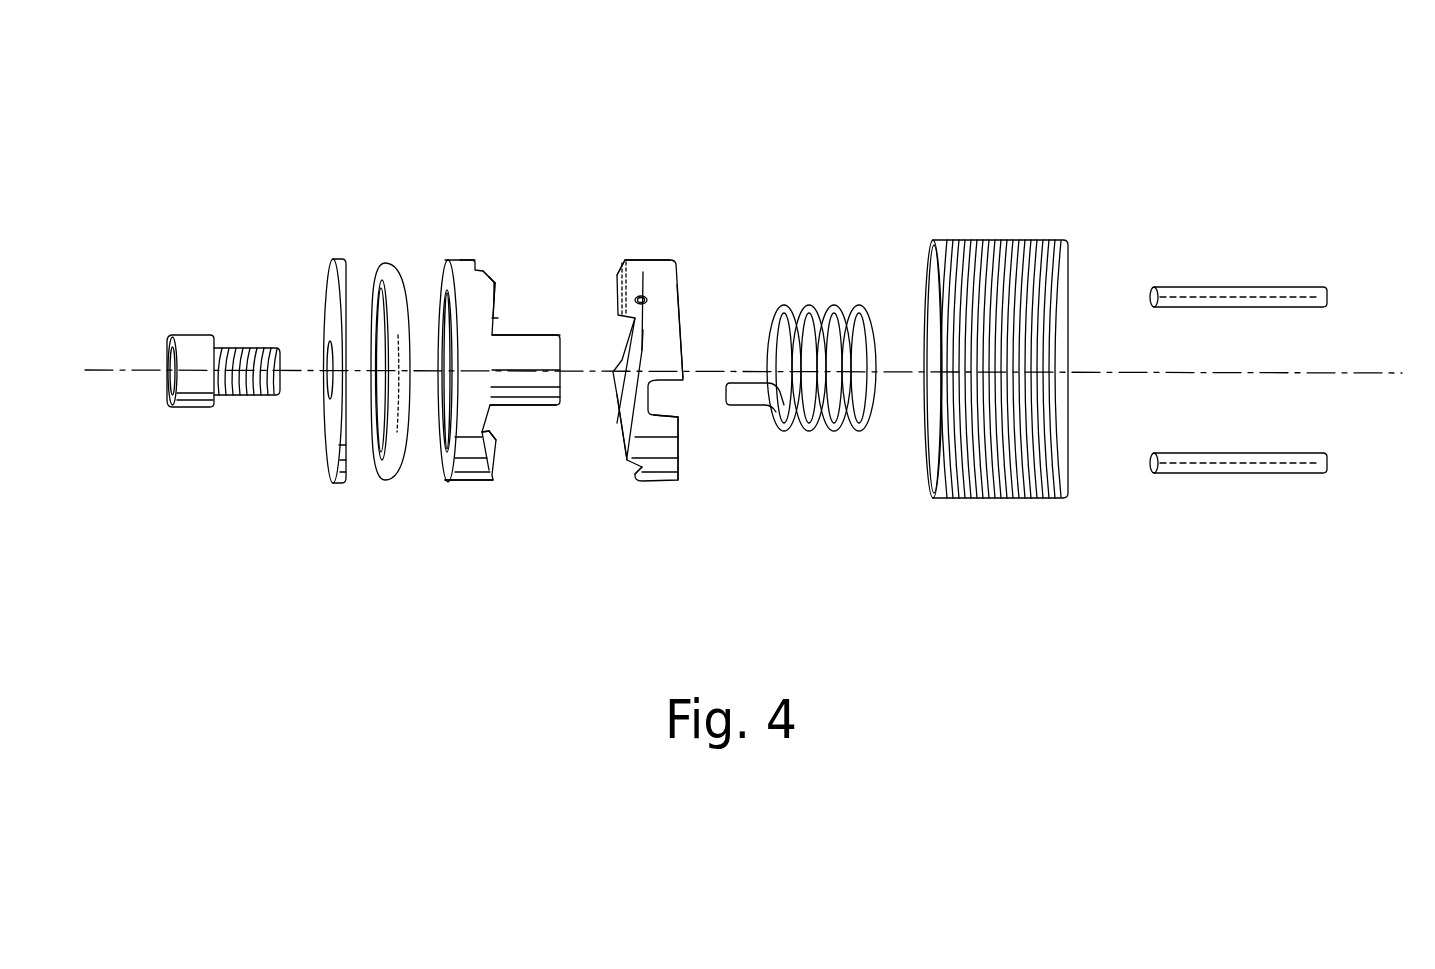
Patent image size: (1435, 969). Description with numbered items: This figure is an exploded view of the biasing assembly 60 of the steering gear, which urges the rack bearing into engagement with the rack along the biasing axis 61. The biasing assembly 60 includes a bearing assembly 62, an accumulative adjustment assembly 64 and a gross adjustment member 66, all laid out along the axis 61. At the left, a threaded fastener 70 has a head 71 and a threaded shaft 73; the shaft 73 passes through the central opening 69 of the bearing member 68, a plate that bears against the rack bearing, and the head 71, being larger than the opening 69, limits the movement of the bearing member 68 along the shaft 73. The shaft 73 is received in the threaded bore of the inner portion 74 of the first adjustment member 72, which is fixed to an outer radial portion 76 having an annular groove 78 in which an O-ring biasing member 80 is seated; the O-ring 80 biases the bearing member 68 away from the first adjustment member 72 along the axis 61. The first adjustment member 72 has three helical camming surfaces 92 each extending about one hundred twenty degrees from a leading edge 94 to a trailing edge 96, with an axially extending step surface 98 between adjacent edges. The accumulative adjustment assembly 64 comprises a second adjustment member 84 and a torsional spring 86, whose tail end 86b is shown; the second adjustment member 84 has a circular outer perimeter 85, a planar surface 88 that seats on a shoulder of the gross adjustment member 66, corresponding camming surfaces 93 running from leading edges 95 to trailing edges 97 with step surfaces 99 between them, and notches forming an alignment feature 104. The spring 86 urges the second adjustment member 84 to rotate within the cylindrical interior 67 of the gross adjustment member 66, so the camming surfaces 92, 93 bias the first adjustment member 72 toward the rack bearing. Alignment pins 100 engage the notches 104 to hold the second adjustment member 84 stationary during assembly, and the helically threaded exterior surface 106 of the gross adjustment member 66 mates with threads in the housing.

The biasing assembly 60 is at (672, 100).
The biasing axis 61 is at (1345, 375).
The bearing assembly 62 is at (494, 357).
The accumulative adjustment assembly 64 is at (729, 367).
The gross adjustment member 66 is at (981, 381).
The cylindrical interior 67 is at (930, 277).
The bearing member 68 is at (298, 401).
The central opening 69 is at (327, 357).
The threaded fastener 70 is at (189, 362).
The head 71 is at (187, 405).
The first adjustment member 72 is at (475, 272).
The threaded shaft 73 is at (260, 348).
The inner portion 74 is at (523, 398).
The outer radial portion 76 is at (467, 483).
The annular groove 78 is at (430, 280).
The biasing member (O-ring) 80 is at (387, 473).
The second adjustment member 84 is at (658, 260).
The outer perimeter 85 is at (680, 445).
The torsional spring 86 is at (801, 344).
The spring tail end 86b is at (745, 405).
The planar surface 88 is at (681, 300).
The camming surfaces 92 is at (486, 274).
The camming surfaces 93 is at (643, 343).
The leading edge 94 is at (497, 457).
The leading edges 95 is at (644, 298).
The trailing edge 96 is at (503, 276).
The trailing edges 97 is at (625, 430).
The step surface 98 is at (495, 276).
The step surfaces 99 is at (618, 290).
The alignment pins 100 is at (1222, 287).
The alignment feature (notches) 104 is at (670, 448).
The helically threaded radially exterior surface 106 is at (1000, 240).